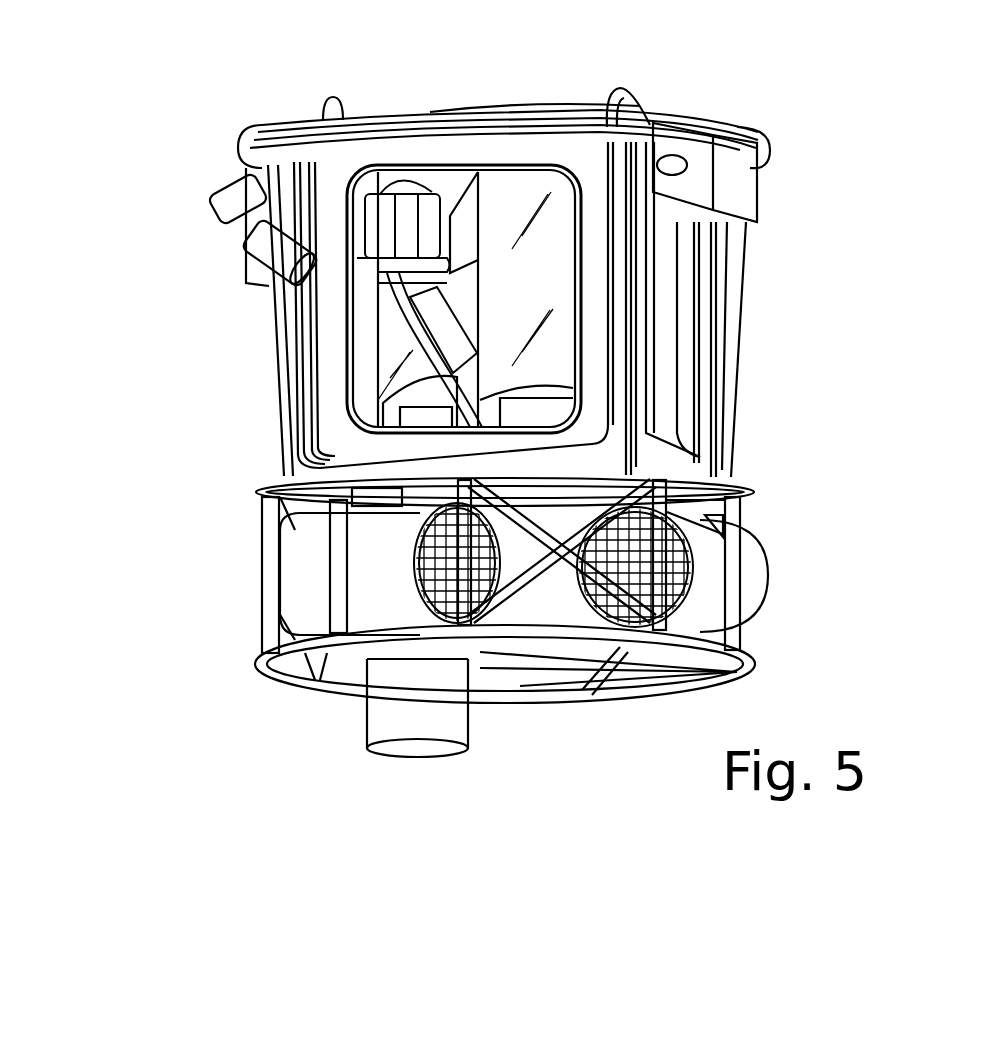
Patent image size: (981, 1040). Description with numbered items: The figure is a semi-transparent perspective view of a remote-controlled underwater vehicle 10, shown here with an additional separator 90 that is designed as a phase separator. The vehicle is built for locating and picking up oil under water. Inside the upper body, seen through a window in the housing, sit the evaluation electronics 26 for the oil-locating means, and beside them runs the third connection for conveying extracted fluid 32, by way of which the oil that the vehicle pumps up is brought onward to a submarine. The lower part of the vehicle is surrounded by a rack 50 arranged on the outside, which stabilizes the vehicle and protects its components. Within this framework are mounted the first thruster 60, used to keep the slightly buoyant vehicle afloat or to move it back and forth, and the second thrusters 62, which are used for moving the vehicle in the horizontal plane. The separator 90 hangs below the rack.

The remote-controlled underwater vehicle 10 is at (213, 84).
The evaluation electronics 26 is at (392, 207).
The third connection for conveying extracted fluid 32 is at (405, 338).
The rack 50 is at (315, 688).
The first thruster 60 is at (553, 578).
The second thrusters 62 is at (710, 587).
The separator 90 is at (425, 712).